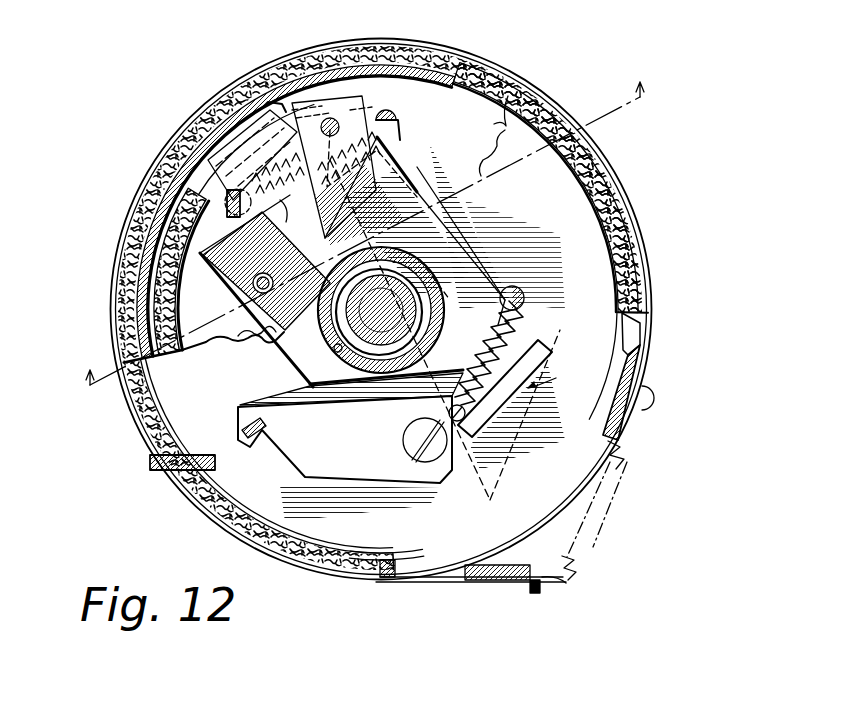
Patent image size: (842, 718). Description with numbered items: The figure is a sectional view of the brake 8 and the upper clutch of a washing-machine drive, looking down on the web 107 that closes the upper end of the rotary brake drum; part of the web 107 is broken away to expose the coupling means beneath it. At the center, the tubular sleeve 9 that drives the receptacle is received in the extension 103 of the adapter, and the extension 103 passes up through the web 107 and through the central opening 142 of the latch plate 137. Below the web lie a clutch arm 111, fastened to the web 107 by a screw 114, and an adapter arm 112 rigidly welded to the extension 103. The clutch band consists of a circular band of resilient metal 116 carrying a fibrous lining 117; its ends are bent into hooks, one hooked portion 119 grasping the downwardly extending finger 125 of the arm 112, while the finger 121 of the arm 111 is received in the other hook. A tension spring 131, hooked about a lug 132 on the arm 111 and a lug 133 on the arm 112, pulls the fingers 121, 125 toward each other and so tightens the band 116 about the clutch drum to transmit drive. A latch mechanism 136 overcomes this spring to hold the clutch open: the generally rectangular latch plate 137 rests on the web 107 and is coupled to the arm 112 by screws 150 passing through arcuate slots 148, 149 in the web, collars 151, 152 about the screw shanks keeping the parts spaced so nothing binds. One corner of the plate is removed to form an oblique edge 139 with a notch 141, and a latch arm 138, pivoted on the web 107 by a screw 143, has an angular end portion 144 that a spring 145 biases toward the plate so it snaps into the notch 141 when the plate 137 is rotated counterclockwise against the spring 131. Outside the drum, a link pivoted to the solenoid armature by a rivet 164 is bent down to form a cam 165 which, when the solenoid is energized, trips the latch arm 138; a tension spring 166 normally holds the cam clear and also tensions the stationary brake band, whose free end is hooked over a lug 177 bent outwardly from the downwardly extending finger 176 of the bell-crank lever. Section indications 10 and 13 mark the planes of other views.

The brake 8 is at (644, 240).
The tubular shaft or sleeve 9 is at (394, 286).
The phantom line 10 is at (451, 282).
The section line 13 is at (364, 246).
The extension of the adapter 103 is at (334, 346).
The web 107 is at (524, 128).
The clutch arm 111 is at (458, 168).
The adapter arm 112 is at (204, 254).
The screw 114 is at (323, 102).
The circular band of resilient metal 116 is at (166, 224).
The lining 117 is at (137, 308).
The hooked portion 119 is at (380, 284).
The finger 121 is at (330, 118).
The finger 125 is at (218, 128).
The tension spring 131 is at (316, 188).
The lug 132 is at (398, 122).
The lug 133 is at (222, 206).
The latch mechanism 136 is at (564, 378).
The latch plate 137 is at (472, 280).
The latch arm 138 is at (360, 482).
The oblique edge 139 is at (312, 392).
The notch 141 is at (408, 406).
The central opening 142 is at (308, 345).
The screw 143 is at (438, 470).
The end portion 144 is at (510, 396).
The spring 145 is at (474, 432).
The arcuate slot 148 is at (246, 354).
The arcuate slot 149 is at (516, 290).
The screws 150 is at (246, 332).
The collar 151 is at (246, 294).
The collar 152 is at (530, 340).
The rivet 164 is at (162, 470).
The cam 165 is at (242, 426).
The tension spring 166 is at (607, 512).
The finger 176 is at (500, 580).
The lug 177 is at (539, 596).